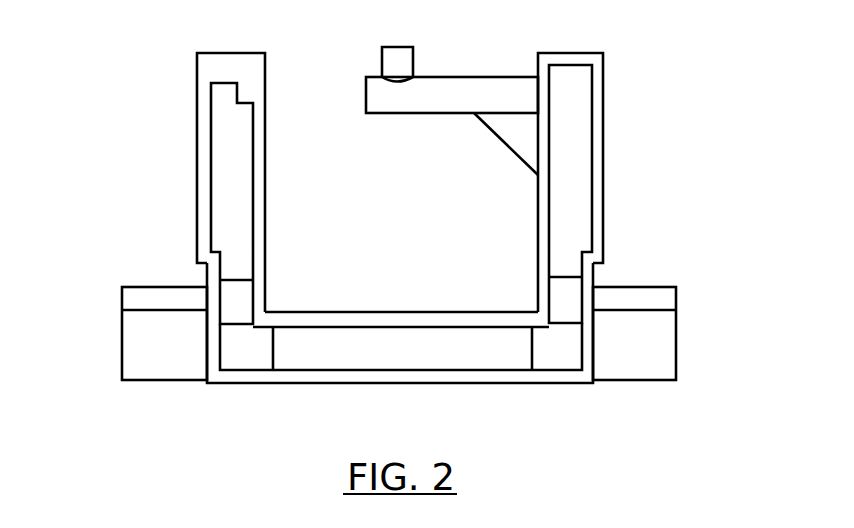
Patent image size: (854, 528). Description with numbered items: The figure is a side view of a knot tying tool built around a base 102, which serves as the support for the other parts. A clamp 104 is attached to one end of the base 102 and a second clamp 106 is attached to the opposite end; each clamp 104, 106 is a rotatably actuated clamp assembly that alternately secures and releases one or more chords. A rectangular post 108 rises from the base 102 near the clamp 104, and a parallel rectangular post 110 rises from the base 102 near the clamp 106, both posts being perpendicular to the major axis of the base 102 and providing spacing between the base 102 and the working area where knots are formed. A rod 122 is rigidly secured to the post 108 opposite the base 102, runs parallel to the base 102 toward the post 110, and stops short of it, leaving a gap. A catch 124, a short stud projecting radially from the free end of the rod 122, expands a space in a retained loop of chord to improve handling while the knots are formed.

The base 102 is at (357, 383).
The clamp 104 is at (678, 277).
The clamp 106 is at (122, 277).
The post 108 is at (603, 175).
The post 110 is at (197, 172).
The rod 122 is at (478, 77).
The catch 124 is at (382, 63).